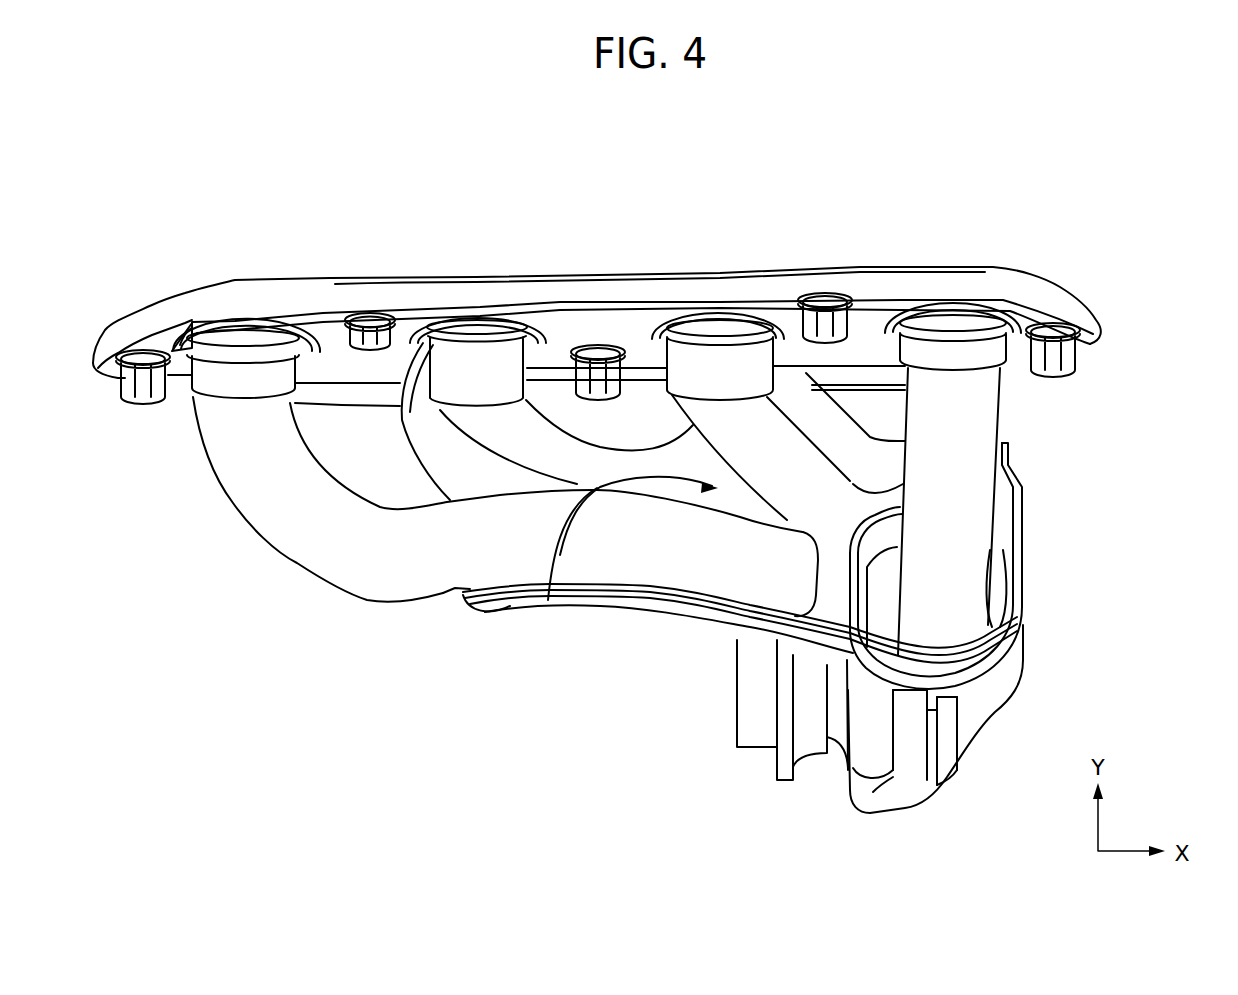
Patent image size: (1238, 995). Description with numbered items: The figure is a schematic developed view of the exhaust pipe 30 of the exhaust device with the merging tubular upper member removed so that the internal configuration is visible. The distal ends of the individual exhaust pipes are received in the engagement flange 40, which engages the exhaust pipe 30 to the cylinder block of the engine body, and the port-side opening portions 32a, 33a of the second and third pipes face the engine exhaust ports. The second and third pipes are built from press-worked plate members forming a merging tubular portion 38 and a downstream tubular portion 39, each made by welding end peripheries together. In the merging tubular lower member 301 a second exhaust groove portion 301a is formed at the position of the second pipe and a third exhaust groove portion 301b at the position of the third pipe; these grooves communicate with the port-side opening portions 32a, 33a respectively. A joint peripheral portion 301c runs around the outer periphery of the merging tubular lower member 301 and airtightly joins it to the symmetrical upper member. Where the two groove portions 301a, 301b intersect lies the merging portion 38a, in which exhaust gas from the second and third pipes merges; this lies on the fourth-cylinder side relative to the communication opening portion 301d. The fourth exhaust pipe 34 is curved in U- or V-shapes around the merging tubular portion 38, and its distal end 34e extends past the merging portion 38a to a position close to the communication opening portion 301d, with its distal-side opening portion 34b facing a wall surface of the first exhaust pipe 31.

The exhaust pipe 30 is at (1070, 590).
The #1 exhaust pipe 31 is at (958, 410).
The port-side opening portion 32a is at (718, 326).
The port-side opening portion 33a is at (480, 340).
The #4 exhaust pipe 34 is at (253, 492).
The distal-side opening portion 34b is at (828, 585).
The distal end 34e is at (733, 570).
The merging tubular portion 38 is at (630, 625).
The merging portion 38a is at (551, 620).
The downstream tubular portion 39 is at (985, 730).
The engagement flange 40 is at (263, 296).
The merging tubular lower member 301 is at (607, 606).
The #2 exhaust groove portion 301a is at (745, 420).
The #3 exhaust groove portion 301b is at (502, 424).
The joint peripheral portion 301c is at (431, 436).
The communication opening portion 301d is at (880, 590).